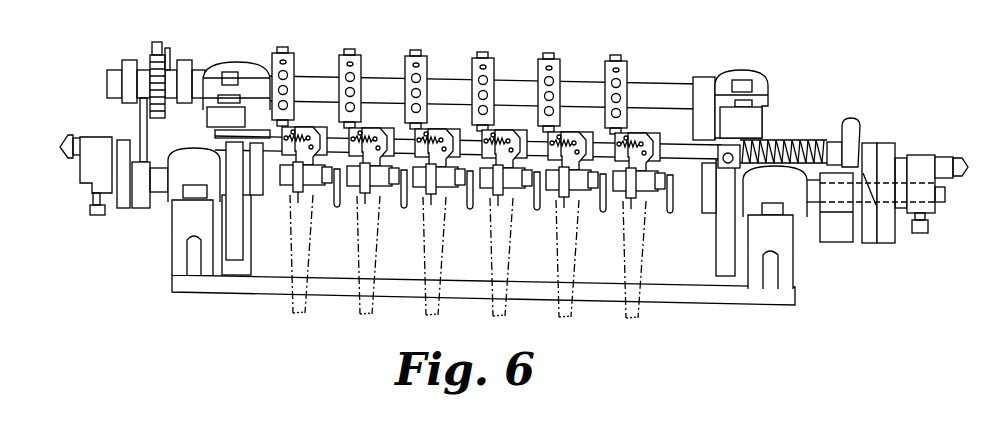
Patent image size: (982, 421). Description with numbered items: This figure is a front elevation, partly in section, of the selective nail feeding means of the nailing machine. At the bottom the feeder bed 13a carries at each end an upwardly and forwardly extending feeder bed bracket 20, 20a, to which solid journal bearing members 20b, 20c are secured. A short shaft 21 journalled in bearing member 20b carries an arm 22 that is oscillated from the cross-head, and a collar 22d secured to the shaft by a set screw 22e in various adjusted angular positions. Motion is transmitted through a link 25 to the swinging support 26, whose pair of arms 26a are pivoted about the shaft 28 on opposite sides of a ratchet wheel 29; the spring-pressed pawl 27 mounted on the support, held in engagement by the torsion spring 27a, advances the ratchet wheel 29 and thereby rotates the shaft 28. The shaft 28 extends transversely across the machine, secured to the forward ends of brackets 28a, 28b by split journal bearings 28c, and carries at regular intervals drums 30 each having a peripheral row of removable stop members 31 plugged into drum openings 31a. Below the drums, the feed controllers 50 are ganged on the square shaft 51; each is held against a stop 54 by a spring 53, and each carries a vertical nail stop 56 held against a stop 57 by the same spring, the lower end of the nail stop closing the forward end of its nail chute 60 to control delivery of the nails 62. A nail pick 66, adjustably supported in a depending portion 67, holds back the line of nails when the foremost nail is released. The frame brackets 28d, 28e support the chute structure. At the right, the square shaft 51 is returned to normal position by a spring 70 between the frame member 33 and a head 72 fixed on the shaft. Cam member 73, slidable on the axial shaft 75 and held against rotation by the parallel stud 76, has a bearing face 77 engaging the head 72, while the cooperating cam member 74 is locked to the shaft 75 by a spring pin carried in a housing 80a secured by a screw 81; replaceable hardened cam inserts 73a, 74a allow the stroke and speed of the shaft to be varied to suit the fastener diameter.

The feeder bed 13a is at (270, 287).
The feeder bed bracket 20 is at (182, 218).
The feeder bed bracket 20a is at (790, 245).
The journal bearing member 20b is at (186, 152).
The journal bearing member 20c is at (766, 197).
The short shaft 21 is at (79, 176).
The arm 22 is at (262, 182).
The collar 22d is at (88, 186).
The set screw 22e is at (93, 212).
The link 25 is at (147, 125).
The swinging support 26 is at (130, 58).
The arms 26a is at (122, 64).
The pawl 27 is at (154, 44).
The torsion spring 27a is at (168, 52).
The shaft 28 is at (383, 86).
The bracket 28a is at (210, 120).
The bracket 28b is at (765, 128).
The split journal bearing 28c is at (228, 63).
The frame bracket 28d is at (244, 256).
The frame bracket 28e is at (720, 250).
The ratchet wheel 29 is at (152, 101).
The drum 30 is at (300, 76).
The stop member 31 is at (284, 51).
The drum opening 31a is at (350, 62).
The frame member 33 is at (728, 137).
The feed controller 50 is at (305, 128).
The square shaft 51 is at (684, 150).
The spring 53 is at (368, 134).
The stop 54 is at (540, 132).
The nail stop 56 is at (352, 196).
The stop 57 is at (626, 137).
The nail chute 60 is at (484, 205).
The nails 62 is at (420, 200).
The nail pick 66 is at (469, 196).
The depending portion 67 is at (517, 191).
The spring 70 is at (800, 141).
The head 72 is at (832, 141).
The cam member 73 is at (866, 143).
The hardened cam insert 73a is at (868, 244).
The cam member 74 is at (900, 158).
The hardened cam insert 74a is at (882, 145).
The axial shaft 75 is at (946, 194).
The stud 76 is at (818, 240).
The bearing face 77 is at (847, 119).
The housing 80a is at (928, 168).
The screw 81 is at (930, 231).